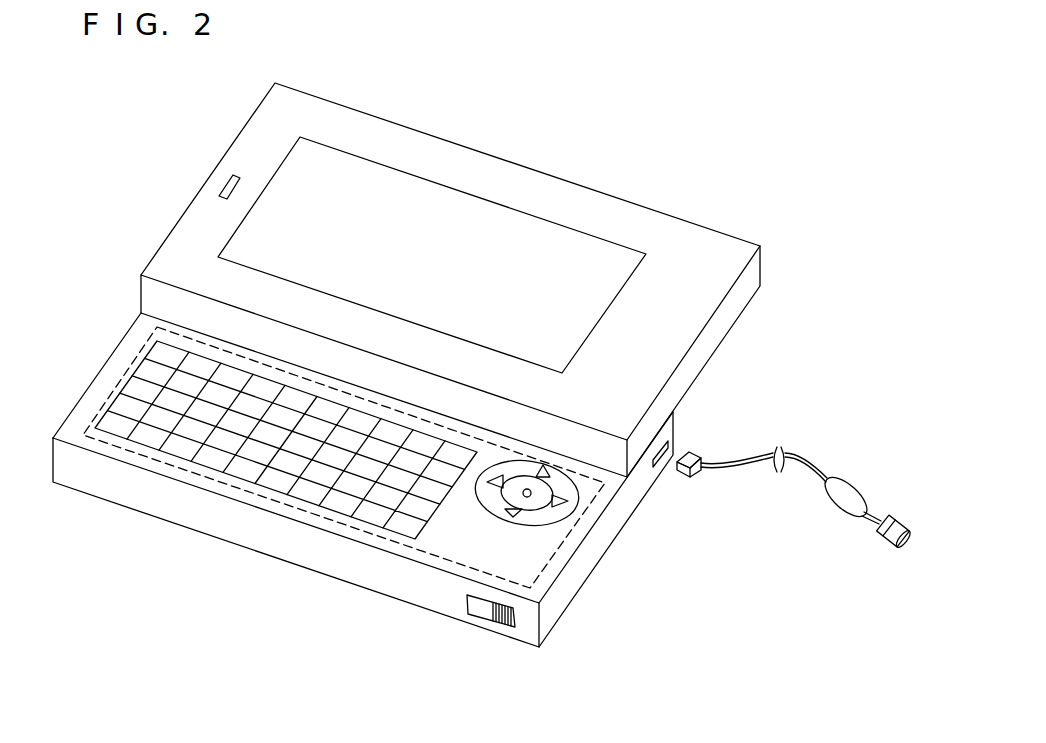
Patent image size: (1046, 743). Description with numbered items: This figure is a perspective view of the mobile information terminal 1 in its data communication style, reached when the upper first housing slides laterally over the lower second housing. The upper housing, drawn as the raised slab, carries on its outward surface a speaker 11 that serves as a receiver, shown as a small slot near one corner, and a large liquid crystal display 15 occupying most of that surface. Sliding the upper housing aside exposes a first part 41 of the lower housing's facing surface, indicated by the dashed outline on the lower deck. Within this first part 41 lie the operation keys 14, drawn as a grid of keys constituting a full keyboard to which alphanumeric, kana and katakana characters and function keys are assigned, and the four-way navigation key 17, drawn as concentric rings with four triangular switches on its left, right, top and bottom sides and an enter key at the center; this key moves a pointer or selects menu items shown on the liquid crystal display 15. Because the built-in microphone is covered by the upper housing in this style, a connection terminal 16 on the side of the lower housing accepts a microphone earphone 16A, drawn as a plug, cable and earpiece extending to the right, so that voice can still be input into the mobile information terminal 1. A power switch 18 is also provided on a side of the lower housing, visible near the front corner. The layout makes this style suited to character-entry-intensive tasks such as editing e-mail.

The mobile information terminal 1 is at (770, 146).
The speaker 11 is at (228, 188).
The operation keys 14 is at (185, 450).
The liquid crystal display 15 is at (457, 237).
The connection terminal 16 is at (663, 443).
The microphone earphone 16A is at (813, 477).
The four-way navigation key 17 is at (550, 513).
The power switch 18 is at (473, 607).
The first part 41 is at (432, 555).